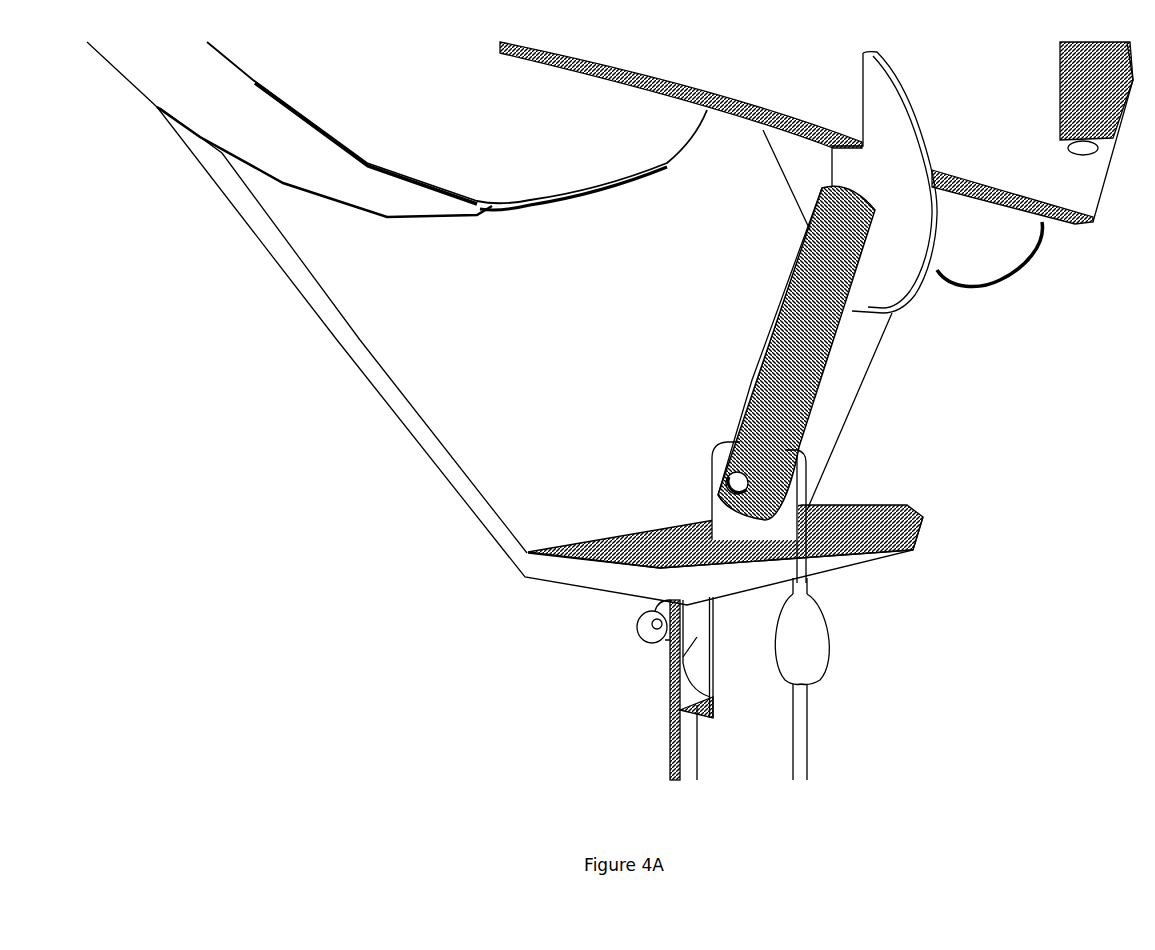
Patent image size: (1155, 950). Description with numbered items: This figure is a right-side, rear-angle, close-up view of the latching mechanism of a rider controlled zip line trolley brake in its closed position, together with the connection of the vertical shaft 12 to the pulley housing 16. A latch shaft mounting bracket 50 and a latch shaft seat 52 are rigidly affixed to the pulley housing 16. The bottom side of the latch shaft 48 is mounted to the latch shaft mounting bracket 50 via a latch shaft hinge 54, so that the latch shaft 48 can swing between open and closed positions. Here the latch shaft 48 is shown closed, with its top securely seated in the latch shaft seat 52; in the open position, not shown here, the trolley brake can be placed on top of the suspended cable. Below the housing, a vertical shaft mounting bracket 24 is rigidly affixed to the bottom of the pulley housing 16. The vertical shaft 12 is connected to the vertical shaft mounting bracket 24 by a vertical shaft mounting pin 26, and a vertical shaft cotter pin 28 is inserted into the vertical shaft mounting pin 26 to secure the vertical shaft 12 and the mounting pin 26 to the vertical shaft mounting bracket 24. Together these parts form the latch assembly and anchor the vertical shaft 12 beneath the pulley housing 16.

The vertical shaft 12 is at (787, 703).
The pulley housing 16 is at (402, 427).
The vertical shaft mounting bracket 24 is at (668, 673).
The vertical shaft mounting pin 26 is at (830, 643).
The vertical shaft cotter pin 28 is at (650, 630).
The latch shaft 48 is at (833, 390).
The latch shaft mounting bracket 50 is at (723, 517).
The latch shaft seat 52 is at (890, 275).
The latch shaft hinge 54 is at (712, 451).